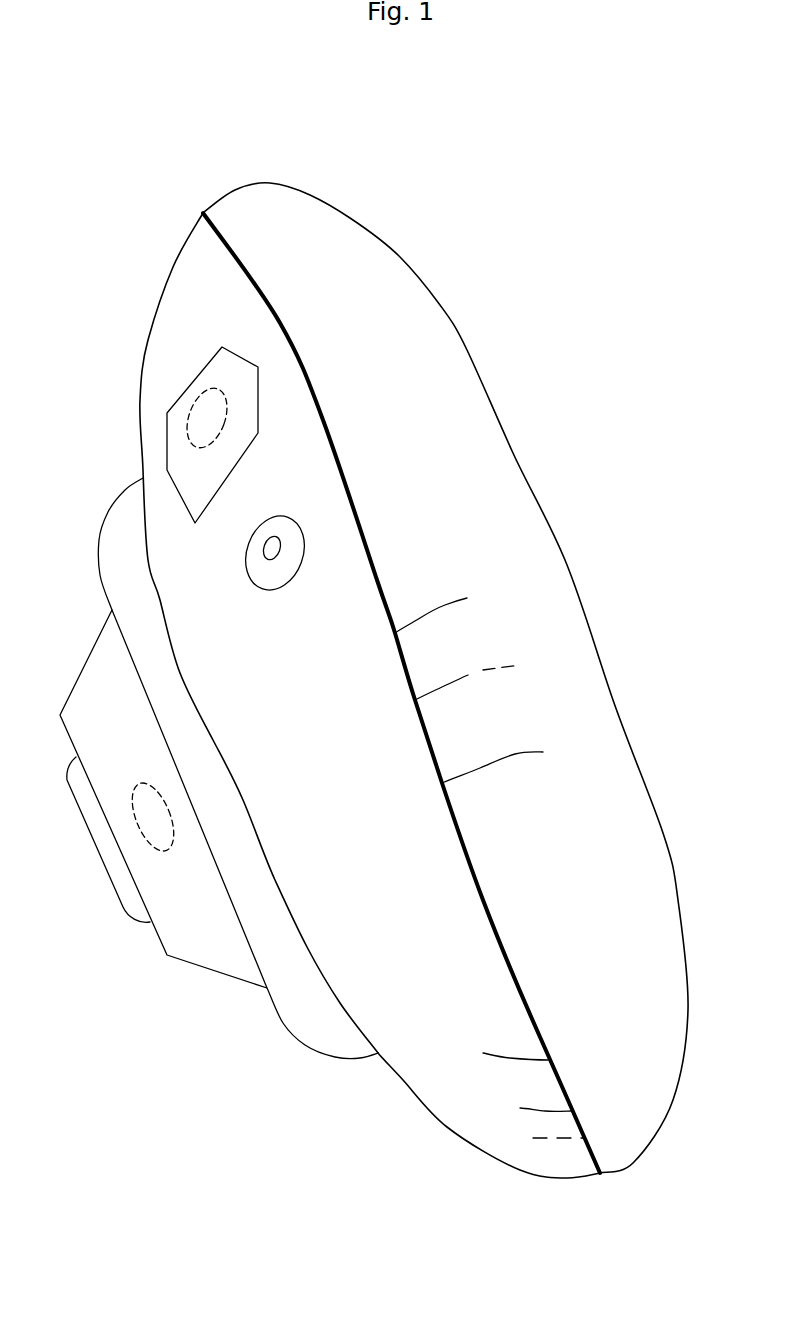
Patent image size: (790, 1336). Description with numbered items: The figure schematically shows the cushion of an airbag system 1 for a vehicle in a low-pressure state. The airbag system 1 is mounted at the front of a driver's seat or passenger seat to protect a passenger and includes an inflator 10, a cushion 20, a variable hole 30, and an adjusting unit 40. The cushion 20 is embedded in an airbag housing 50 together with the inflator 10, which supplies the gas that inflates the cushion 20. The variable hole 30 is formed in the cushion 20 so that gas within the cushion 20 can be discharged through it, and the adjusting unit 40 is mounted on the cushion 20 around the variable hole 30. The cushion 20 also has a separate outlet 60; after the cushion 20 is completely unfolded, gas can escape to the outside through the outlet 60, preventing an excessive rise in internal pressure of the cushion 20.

The airbag system 1 is at (591, 175).
The inflator 10 is at (155, 828).
The cushion 20 is at (567, 1163).
The variable hole 30 is at (207, 400).
The adjusting unit 40 is at (175, 433).
The airbag housing 50 is at (200, 955).
The outlet 60 is at (270, 557).